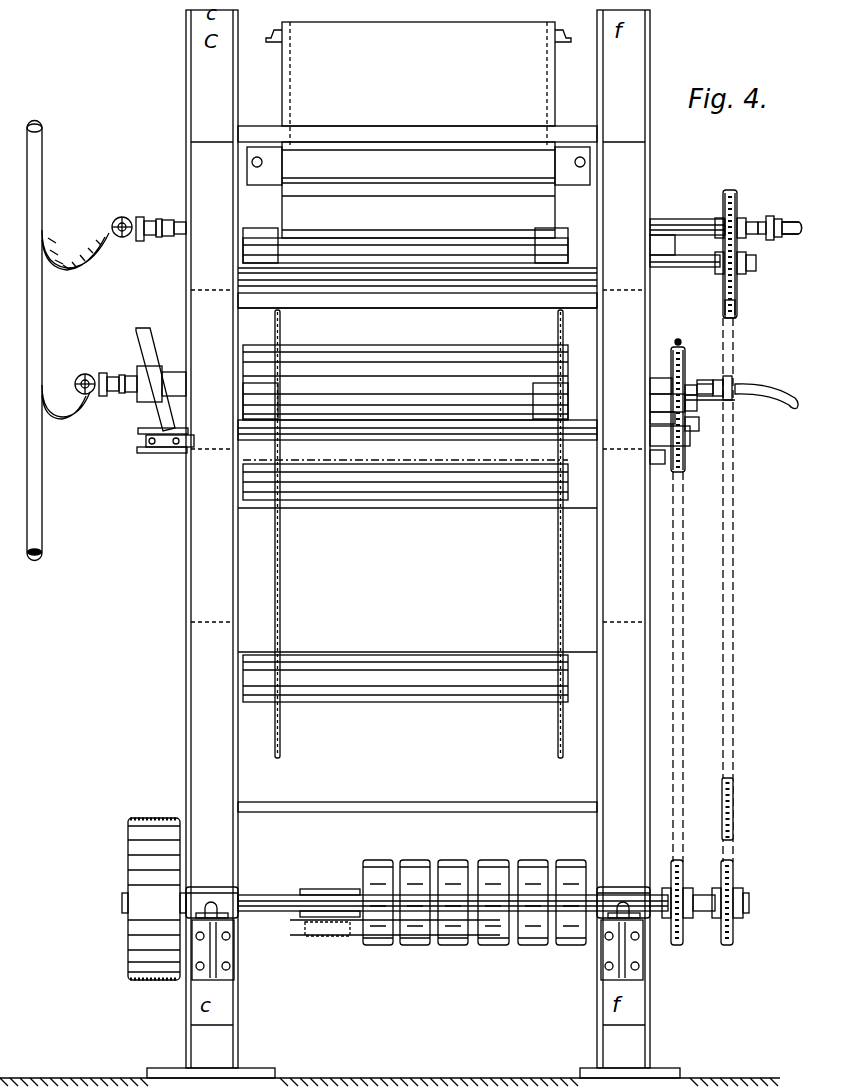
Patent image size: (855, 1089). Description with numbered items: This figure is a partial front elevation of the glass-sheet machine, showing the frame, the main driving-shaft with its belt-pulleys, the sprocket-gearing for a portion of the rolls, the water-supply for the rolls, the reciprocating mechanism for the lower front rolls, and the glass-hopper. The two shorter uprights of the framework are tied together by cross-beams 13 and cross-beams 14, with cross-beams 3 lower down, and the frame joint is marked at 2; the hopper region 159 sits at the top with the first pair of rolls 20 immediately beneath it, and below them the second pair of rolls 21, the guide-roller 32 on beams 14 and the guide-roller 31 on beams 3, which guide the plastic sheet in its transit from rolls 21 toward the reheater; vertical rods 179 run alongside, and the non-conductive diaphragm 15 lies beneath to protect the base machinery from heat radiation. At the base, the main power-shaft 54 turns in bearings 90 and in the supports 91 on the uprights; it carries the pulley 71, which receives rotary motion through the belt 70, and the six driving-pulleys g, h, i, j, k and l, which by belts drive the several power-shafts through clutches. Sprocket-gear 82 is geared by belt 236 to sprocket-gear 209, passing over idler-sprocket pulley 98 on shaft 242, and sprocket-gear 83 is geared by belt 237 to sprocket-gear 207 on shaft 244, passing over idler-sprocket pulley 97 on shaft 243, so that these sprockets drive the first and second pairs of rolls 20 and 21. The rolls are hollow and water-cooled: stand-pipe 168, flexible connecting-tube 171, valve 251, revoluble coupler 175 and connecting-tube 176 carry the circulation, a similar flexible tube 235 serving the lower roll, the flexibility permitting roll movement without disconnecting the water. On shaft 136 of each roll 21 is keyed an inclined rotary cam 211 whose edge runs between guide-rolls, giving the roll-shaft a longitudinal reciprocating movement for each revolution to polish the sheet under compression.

The frame section line 2 is at (418, 132).
The cross-beams 3 is at (418, 611).
The cross-beams 13 is at (418, 280).
The cross-beams 14 is at (418, 439).
The non-conductive diaphragm 15 is at (417, 798).
The first pair of rolls 20 is at (417, 214).
The second pair of rolls 21 is at (417, 374).
The guide-roller 31 is at (417, 677).
The guide-roller 32 is at (417, 484).
The main power-shaft 54 is at (305, 895).
The belt 70 is at (154, 889).
The pulley 71 is at (129, 826).
The sprocket-gear 82 is at (688, 909).
The sprocket-gear 83 is at (733, 909).
The bearings 90 is at (640, 975).
The shaft bearing 91 is at (418, 894).
The idler-sprocket pulley 97 is at (741, 305).
The idler-sprocket pulley 98 is at (686, 464).
The roll shaft 136 is at (182, 370).
The hopper box 159 is at (418, 83).
The stand-pipe 168 is at (42, 155).
The connecting-tube 171 is at (75, 250).
The revoluble coupler 175 is at (768, 218).
The connecting-tube 176 is at (788, 236).
The guide rod 179 is at (558, 558).
The sprocket-gear 207 is at (726, 194).
The sprocket-gear 209 is at (684, 352).
The cam 211 is at (135, 330).
The flexible hose 235 is at (766, 389).
The belt 236 is at (669, 667).
The belt 237 is at (742, 590).
The shaft 242 is at (604, 428).
The shaft 243 is at (712, 282).
The shaft 244 is at (702, 226).
The valve 251 is at (120, 218).
The driving-pulley l is at (369, 916).
The driving-pulley k is at (407, 914).
The driving-pulley j is at (446, 913).
The driving-pulley i is at (488, 913).
The driving-pulley h is at (527, 914).
The driving-pulley g is at (566, 915).